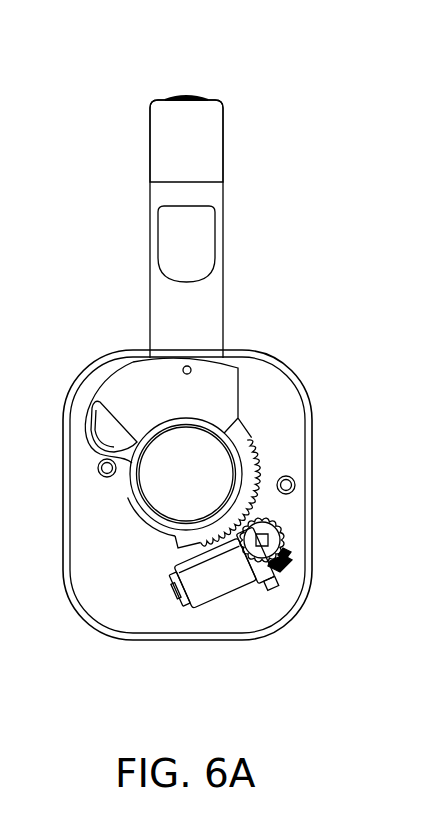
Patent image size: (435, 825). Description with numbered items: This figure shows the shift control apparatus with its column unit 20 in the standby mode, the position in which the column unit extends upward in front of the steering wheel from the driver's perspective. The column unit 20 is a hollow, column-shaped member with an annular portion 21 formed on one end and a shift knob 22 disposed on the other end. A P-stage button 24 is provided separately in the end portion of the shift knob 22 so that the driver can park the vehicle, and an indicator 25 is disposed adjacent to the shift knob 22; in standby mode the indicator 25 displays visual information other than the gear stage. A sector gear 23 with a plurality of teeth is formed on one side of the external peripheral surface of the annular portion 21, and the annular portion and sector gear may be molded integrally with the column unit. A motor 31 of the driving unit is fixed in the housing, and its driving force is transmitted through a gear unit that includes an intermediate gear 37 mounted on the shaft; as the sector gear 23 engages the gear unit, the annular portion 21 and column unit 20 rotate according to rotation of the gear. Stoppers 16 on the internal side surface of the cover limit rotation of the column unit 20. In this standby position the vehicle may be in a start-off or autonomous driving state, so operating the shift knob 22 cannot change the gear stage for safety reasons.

The stopper 16 is at (98, 469).
The column unit 20 is at (205, 306).
The annular portion 21 is at (128, 497).
The shift knob 22 is at (213, 143).
The sector gear 23 is at (268, 442).
The P-stage button 24 is at (186, 93).
The indicator 25 is at (168, 238).
The motor 31 is at (207, 588).
The intermediate gear 37 is at (285, 535).